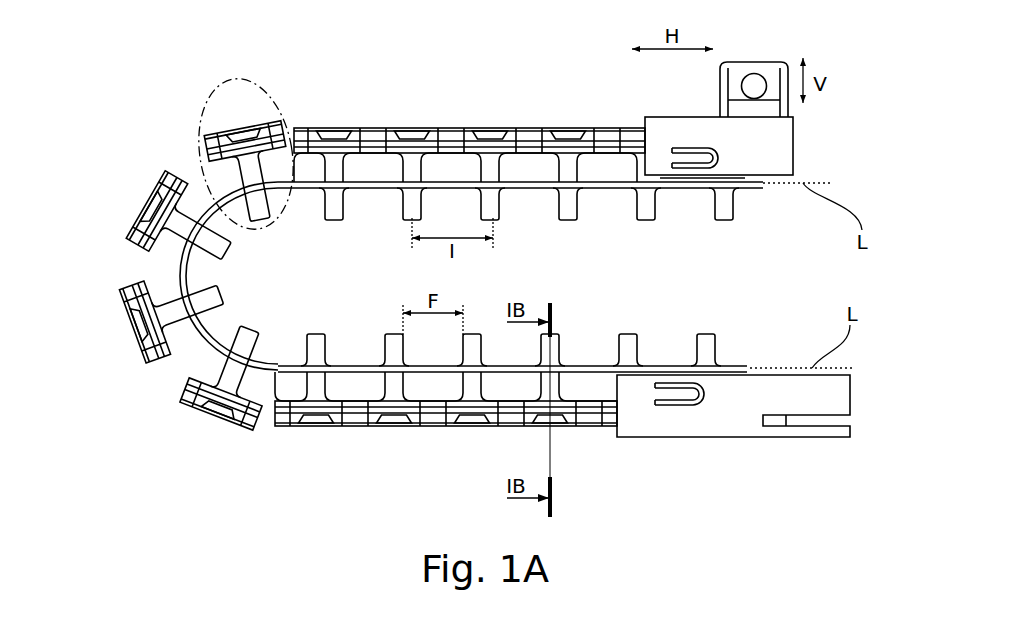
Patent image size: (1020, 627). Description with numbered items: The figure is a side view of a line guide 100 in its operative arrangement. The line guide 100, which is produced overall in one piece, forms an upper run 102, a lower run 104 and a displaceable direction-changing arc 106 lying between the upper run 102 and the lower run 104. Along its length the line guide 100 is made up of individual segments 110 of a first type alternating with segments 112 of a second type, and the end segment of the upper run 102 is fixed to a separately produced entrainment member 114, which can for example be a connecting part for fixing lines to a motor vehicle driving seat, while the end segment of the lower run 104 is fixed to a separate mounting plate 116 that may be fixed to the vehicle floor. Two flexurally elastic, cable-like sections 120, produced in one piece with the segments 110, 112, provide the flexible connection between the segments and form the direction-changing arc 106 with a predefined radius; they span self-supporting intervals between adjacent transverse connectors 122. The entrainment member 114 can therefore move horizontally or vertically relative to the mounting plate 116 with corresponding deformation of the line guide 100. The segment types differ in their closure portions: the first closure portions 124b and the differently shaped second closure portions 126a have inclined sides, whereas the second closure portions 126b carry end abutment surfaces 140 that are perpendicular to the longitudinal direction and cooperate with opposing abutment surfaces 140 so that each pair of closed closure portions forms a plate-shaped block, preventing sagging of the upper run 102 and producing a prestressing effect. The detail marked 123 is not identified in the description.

The line guide 100 is at (179, 104).
The upper run 102 is at (656, 237).
The lower run 104 is at (650, 316).
The direction-changing arc 106 is at (250, 284).
The segments of a first type 110 is at (535, 431).
The segments of a second type 112 is at (455, 431).
The entrainment member 114 is at (773, 140).
The mounting plate 116 is at (737, 415).
The sections 120 is at (178, 262).
The transverse connectors 122 is at (393, 334).
The singulated contact 123 is at (240, 80).
The first closure portions 124b is at (165, 171).
The second closure portions 126a is at (147, 348).
The second closure portions 126b is at (145, 212).
The end abutment surfaces 140 is at (255, 431).